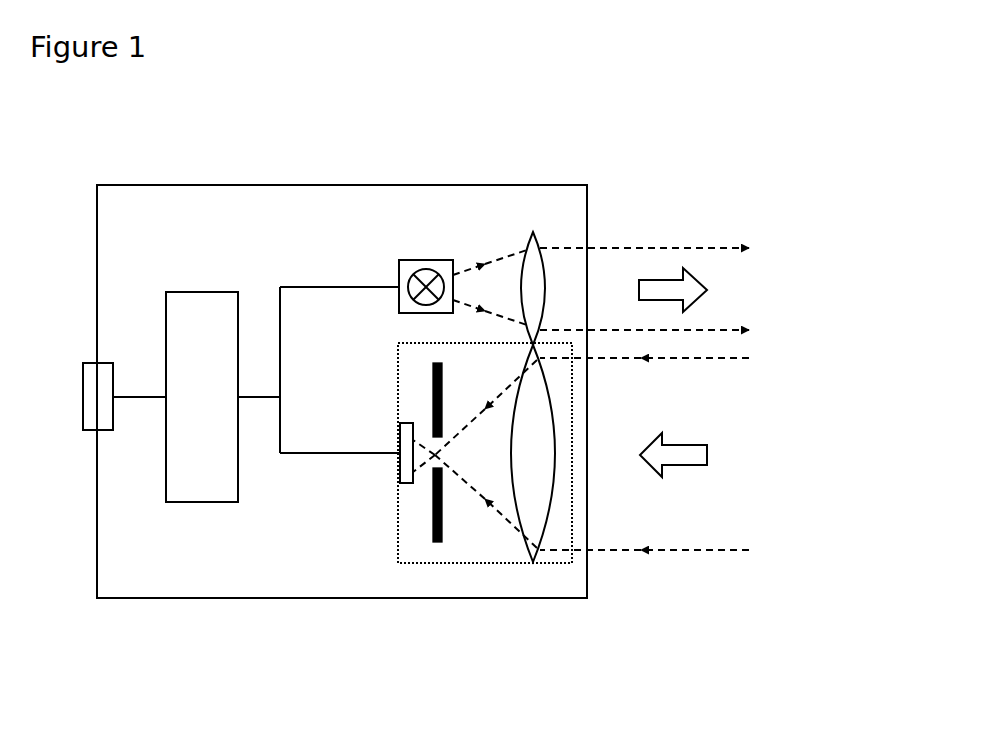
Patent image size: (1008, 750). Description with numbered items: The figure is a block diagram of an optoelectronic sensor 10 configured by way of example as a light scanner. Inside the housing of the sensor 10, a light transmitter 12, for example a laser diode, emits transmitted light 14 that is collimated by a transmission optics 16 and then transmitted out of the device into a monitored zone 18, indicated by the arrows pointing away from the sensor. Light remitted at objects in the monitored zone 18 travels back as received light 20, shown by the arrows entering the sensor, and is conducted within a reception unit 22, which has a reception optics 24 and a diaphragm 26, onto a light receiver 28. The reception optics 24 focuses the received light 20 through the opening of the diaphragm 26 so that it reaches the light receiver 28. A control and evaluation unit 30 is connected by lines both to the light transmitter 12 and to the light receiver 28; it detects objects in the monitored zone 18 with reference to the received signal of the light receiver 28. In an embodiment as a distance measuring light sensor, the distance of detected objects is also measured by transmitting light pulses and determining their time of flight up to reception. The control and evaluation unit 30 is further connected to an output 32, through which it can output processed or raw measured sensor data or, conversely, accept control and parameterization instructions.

The optoelectronic sensor 10 is at (342, 331).
The light transmitter 12 is at (392, 266).
The transmitted light 14 is at (601, 263).
The transmission optics 16 is at (507, 274).
The monitored zone 18 is at (765, 320).
The received light 20 is at (659, 454).
The reception unit 22 is at (485, 502).
The reception optics 24 is at (526, 453).
The diaphragm 26 is at (420, 512).
The light receiver 28 is at (373, 498).
The control and evaluation unit 30 is at (196, 362).
The output 32 is at (71, 428).